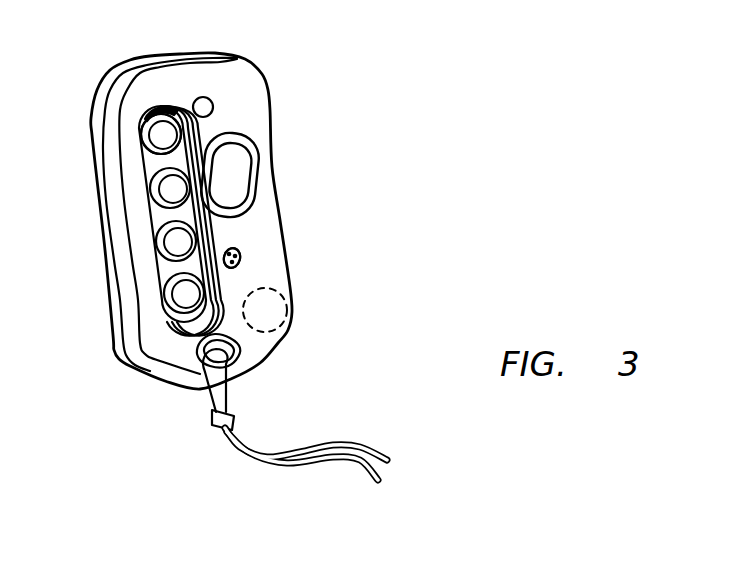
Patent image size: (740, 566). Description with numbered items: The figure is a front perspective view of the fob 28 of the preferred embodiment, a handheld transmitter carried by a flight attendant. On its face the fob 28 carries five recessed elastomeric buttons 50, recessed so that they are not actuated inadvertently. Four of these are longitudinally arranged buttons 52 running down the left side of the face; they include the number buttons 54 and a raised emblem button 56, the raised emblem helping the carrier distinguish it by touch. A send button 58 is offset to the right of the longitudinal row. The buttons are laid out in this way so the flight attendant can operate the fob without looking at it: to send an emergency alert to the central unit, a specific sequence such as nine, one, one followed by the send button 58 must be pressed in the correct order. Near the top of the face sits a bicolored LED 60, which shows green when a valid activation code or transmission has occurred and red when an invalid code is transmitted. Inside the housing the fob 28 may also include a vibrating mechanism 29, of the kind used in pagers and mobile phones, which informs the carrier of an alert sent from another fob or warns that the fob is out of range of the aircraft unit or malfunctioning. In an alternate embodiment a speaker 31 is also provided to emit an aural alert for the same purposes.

The fob 28 is at (434, 135).
The vibrating mechanism 29 is at (279, 305).
The speaker 31 is at (236, 250).
The recessed elastomeric buttons 50 is at (163, 298).
The longitudinally arranged buttons 52 is at (140, 135).
The number buttons 54 is at (162, 108).
The raised emblem button 56 is at (241, 257).
The send button 58 is at (240, 178).
The bicolored LED 60 is at (215, 107).